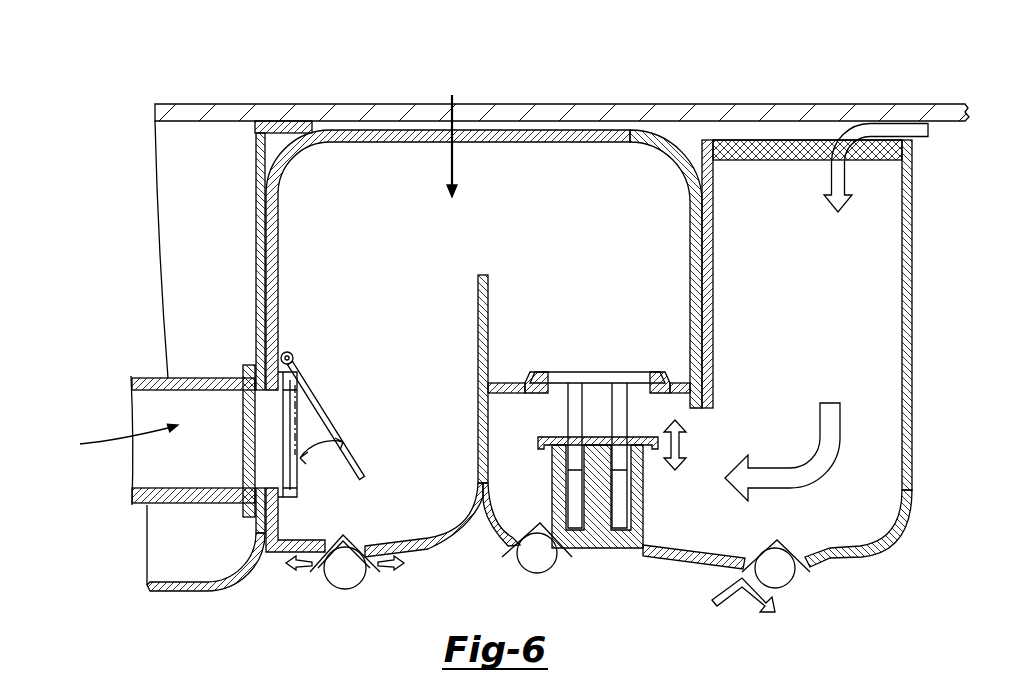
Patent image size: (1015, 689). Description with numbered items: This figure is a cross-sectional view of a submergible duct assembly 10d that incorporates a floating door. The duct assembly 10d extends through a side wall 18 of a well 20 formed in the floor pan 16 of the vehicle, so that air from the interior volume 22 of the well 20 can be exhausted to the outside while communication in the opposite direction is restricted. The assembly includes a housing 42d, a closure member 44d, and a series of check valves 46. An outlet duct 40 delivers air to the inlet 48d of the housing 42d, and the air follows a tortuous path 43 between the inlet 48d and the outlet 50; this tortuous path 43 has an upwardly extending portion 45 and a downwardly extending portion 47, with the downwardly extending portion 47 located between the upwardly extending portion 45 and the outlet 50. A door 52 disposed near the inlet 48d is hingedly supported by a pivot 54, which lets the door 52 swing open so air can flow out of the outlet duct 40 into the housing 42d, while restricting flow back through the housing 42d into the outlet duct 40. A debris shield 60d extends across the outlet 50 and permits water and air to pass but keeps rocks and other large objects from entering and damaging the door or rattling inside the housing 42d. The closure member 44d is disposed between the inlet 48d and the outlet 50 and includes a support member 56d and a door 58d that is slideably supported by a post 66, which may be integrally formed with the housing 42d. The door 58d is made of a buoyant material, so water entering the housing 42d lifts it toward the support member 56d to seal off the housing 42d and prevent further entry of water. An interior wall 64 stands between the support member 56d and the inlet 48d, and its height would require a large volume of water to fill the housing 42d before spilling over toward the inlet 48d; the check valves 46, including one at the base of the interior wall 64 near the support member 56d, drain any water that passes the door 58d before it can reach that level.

The duct assembly 10d is at (382, 92).
The floor pan 16 is at (937, 104).
The side wall 18 is at (258, 180).
The well 20 is at (158, 592).
The interior volume 22 is at (115, 438).
The outlet duct 40 is at (145, 380).
The housing 42d is at (920, 318).
The tortuous path 43 is at (450, 130).
The closure member 44d is at (587, 368).
The upwardly extending portion 45 is at (390, 362).
The check valves 46 is at (340, 572).
The downwardly extending portion 47 is at (630, 283).
The inlet 48d is at (270, 452).
The outlet 50 is at (742, 130).
The door 52 is at (342, 432).
The pivot 54 is at (294, 354).
The support member 56d is at (517, 382).
The door 58d is at (555, 441).
The debris shield 60d is at (755, 160).
The interior wall 64 is at (490, 305).
The post 66 is at (645, 500).